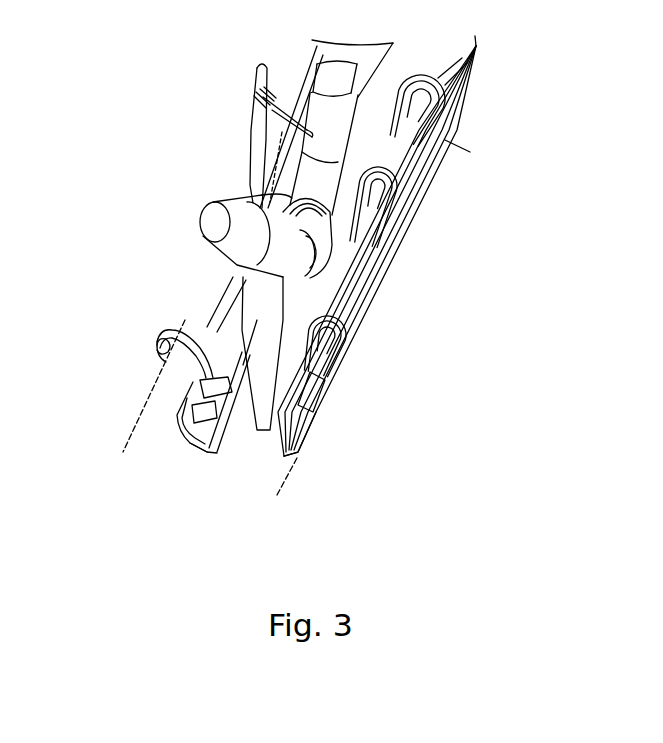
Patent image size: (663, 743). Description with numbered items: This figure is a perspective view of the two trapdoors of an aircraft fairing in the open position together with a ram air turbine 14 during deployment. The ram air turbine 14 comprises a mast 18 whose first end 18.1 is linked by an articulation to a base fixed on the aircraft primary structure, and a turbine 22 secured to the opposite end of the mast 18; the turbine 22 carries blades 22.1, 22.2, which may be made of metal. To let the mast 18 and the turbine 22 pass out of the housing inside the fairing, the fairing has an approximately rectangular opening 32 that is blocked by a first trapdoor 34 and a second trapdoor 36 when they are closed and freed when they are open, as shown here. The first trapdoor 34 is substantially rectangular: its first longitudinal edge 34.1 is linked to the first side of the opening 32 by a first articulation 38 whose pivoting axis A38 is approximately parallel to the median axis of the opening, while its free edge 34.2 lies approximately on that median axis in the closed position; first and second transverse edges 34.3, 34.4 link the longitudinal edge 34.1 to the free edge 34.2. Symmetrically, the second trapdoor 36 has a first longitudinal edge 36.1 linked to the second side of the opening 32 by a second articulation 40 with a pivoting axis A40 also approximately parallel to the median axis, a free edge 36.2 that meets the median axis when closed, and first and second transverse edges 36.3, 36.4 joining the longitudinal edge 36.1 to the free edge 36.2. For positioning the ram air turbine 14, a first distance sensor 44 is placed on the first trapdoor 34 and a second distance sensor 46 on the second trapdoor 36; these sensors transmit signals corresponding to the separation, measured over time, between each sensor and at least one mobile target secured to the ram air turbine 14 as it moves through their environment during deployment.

The ram air turbine 14 is at (312, 41).
The mast 18 is at (440, 83).
The first end of the mast 18.1 is at (335, 215).
The turbine 22 is at (190, 230).
The blade 22.1 is at (258, 108).
The blade 22.2 is at (258, 430).
The opening 32 is at (300, 298).
The first trapdoor 34 is at (388, 330).
The first longitudinal edge of the first trapdoor 34.1 is at (388, 282).
The free edge of the first trapdoor 34.2 is at (355, 293).
The first transverse edge of the first trapdoor 34.3 is at (474, 44).
The second transverse edge of the first trapdoor 34.4 is at (300, 440).
The second trapdoor 36 is at (200, 308).
The first longitudinal edge of the second trapdoor 36.1 is at (163, 370).
The free edge of the second trapdoor 36.2 is at (192, 412).
The first transverse edge of the second trapdoor 36.3 is at (364, 106).
The second transverse edge of the second trapdoor 36.4 is at (200, 438).
The first articulation 38 is at (435, 118).
The second articulation 40 is at (254, 90).
The first distance sensor 44 is at (323, 413).
The second distance sensor 46 is at (205, 432).
The pivoting axis of the first articulation A38 is at (282, 492).
The pivoting axis of the second articulation A40 is at (138, 401).